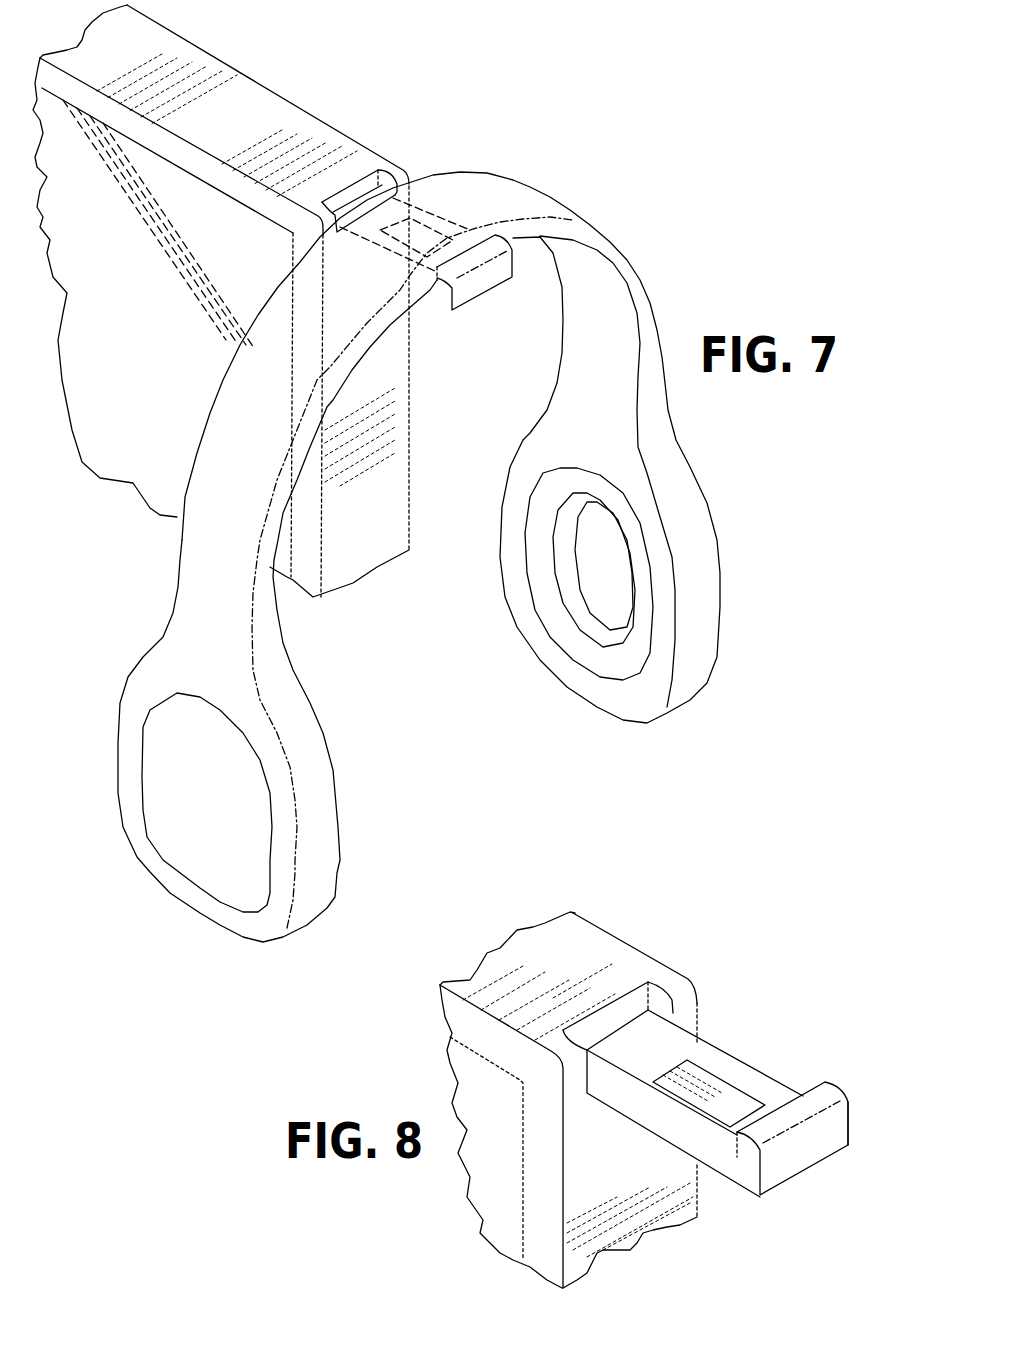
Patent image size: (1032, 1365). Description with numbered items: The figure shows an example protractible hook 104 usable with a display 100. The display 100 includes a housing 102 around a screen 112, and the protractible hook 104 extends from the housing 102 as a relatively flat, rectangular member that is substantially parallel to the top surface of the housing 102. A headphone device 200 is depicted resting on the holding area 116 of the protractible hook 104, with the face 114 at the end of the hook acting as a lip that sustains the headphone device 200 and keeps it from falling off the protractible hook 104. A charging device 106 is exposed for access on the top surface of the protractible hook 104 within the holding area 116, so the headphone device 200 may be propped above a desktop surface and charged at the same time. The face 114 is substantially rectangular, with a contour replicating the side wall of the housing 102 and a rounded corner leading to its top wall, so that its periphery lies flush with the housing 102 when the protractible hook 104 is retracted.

In FIG. 7, the display 100 is at (284, 301).
In FIG. 8, the display 100 is at (690, 1064).
In FIG. 7, the housing 102 is at (262, 82).
In FIG. 8, the housing 102 is at (617, 927).
In FIG. 7, the protractible hook 104 is at (490, 305).
In FIG. 8, the protractible hook 104 is at (827, 1164).
In FIG. 8, the charging device 106 is at (712, 1075).
In FIG. 7, the screen 112 is at (157, 333).
In FIG. 8, the screen 112 is at (488, 1200).
In FIG. 8, the face 114 is at (832, 1160).
In FIG. 8, the holding area 116 is at (767, 1060).
In FIG. 7, the headphone device 200 is at (573, 200).